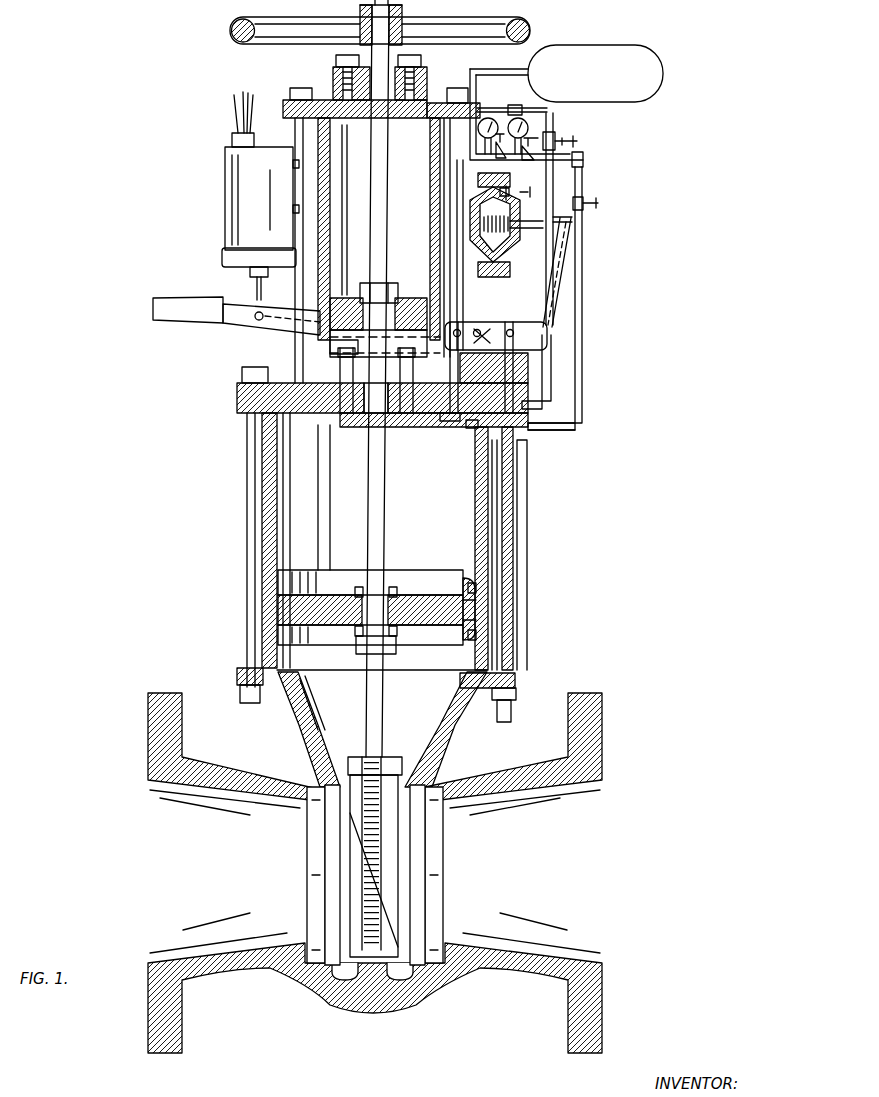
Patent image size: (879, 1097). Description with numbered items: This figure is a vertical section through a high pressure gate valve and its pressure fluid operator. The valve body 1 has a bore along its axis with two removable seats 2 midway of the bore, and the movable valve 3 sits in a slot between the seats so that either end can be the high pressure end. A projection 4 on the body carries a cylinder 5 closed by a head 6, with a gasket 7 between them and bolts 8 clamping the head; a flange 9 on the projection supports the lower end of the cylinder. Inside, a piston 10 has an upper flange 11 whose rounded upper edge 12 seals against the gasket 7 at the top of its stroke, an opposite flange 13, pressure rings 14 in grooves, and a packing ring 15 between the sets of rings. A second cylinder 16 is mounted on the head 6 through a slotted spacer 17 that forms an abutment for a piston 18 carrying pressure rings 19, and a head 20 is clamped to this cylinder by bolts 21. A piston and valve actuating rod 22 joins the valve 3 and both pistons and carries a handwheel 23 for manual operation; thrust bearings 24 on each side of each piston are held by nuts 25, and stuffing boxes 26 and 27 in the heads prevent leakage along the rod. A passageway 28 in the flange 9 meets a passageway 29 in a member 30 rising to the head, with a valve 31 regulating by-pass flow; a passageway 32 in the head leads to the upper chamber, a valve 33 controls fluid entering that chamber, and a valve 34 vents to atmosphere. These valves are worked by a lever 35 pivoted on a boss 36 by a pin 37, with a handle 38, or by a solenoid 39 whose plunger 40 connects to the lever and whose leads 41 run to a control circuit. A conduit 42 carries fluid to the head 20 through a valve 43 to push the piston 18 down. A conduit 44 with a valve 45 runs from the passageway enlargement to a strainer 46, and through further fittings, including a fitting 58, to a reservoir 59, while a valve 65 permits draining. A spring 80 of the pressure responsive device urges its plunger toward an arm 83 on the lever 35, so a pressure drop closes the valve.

The valve body 1 is at (368, 1013).
The removable seats 2 is at (312, 862).
The valve 3 is at (397, 775).
The projection 4 is at (285, 720).
The cylinder 5 is at (262, 460).
The head 6 is at (320, 424).
The gasket 7 is at (262, 386).
The bolts 8 is at (248, 537).
The flange 9 is at (237, 678).
The piston 10 is at (420, 600).
The flange 11 is at (400, 572).
The upper edge 12 is at (265, 563).
The flange 13 is at (455, 635).
The pressure rings 14 is at (480, 590).
The packing ring 15 is at (476, 612).
The cylinder 16 is at (318, 185).
The slotted spacer 17 is at (342, 350).
The piston 18 is at (403, 298).
The pressure rings 19 is at (457, 325).
The head 20 is at (397, 120).
The bolts 21 is at (294, 90).
The piston and valve actuating rod 22 is at (389, 460).
The handwheel 23 is at (532, 26).
The thrust bearings 24 is at (345, 298).
The nuts 25 is at (392, 283).
The stuffing box 26 is at (262, 430).
The stuffing box 27 is at (445, 60).
The passageway 28 is at (460, 685).
The passageway 29 is at (512, 525).
The member 30 is at (512, 490).
The valve 31 is at (517, 708).
The passageway 32 is at (450, 418).
The valve 33 is at (560, 420).
The valve 34 is at (470, 428).
The lever 35 is at (485, 335).
The boss 36 is at (473, 323).
The pin 37 is at (535, 327).
The handle 38 is at (160, 297).
The solenoid 39 is at (225, 180).
The plunger 40 is at (257, 286).
The leads 41 is at (233, 108).
The conduit 42 is at (553, 370).
The valve 43 is at (560, 138).
The conduit 44 is at (583, 262).
The valve 45 is at (587, 203).
The strainer 46 is at (583, 160).
The fitting 58 is at (480, 80).
The reservoir 59 is at (665, 76).
The valve 65 is at (512, 191).
The spring 80 is at (512, 245).
The arm 83 is at (565, 275).